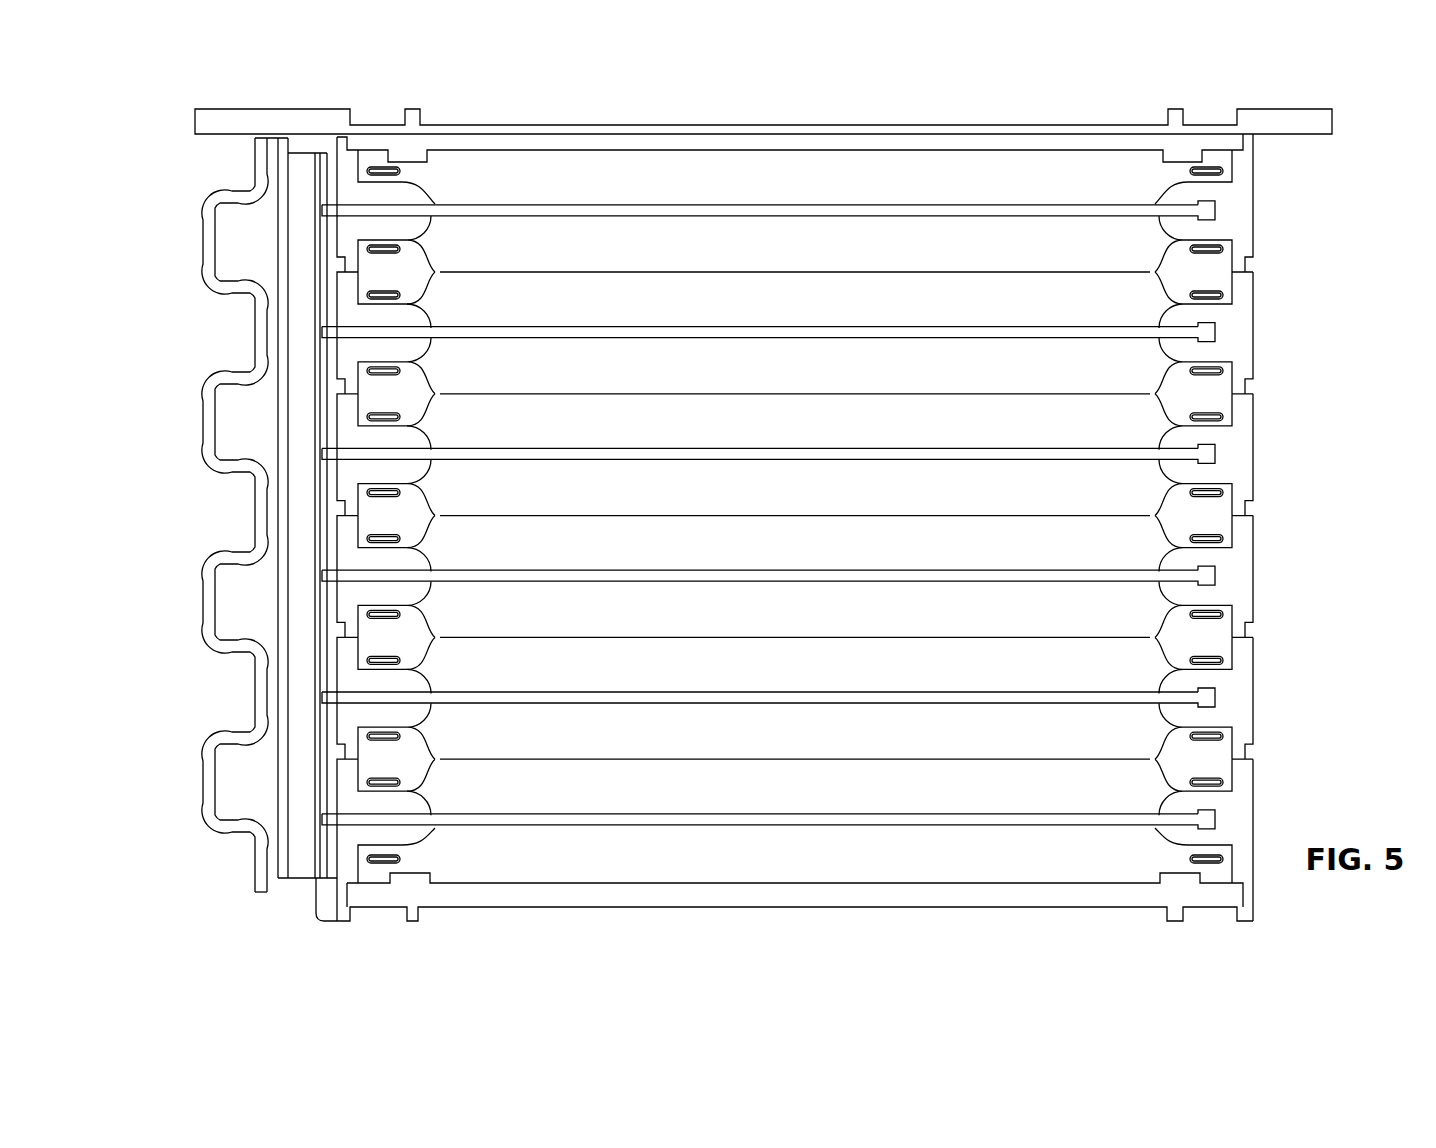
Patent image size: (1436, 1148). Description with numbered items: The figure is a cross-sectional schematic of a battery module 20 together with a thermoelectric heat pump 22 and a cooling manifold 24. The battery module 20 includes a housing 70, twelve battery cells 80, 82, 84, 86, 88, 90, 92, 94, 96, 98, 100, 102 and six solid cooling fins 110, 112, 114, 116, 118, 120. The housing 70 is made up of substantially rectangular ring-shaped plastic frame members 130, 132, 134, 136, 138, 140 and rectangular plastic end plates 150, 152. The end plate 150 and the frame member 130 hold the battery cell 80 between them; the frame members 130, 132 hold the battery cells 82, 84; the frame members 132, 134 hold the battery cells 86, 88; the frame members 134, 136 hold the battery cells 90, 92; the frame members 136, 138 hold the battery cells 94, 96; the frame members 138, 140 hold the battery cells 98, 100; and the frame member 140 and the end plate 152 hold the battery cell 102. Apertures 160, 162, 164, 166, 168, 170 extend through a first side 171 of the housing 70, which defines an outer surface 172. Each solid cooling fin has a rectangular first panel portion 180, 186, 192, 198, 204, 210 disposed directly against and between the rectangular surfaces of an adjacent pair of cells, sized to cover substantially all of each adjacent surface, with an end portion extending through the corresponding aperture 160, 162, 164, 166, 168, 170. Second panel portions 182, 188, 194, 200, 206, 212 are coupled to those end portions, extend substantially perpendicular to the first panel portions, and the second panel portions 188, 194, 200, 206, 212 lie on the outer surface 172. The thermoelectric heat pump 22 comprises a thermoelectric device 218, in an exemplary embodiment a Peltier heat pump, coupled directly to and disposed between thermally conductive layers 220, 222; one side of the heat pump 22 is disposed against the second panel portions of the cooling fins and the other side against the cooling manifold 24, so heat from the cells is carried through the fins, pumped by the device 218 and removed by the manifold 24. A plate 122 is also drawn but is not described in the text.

The battery module 20 is at (968, 108).
The thermoelectric heat pump 22 is at (298, 800).
The cooling manifold 24 is at (233, 478).
The housing 70 is at (848, 132).
The battery cell 80 is at (780, 180).
The battery cell 82 is at (706, 255).
The battery cell 84 is at (780, 302).
The battery cell 86 is at (706, 377).
The battery cell 88 is at (780, 424).
The battery cell 90 is at (706, 499).
The battery cell 92 is at (780, 547).
The battery cell 94 is at (706, 621).
The battery cell 96 is at (780, 668).
The battery cell 98 is at (706, 744).
The battery cell 100 is at (780, 791).
The battery cell 102 is at (795, 883).
The solid cooling fin 110 is at (768, 208).
The solid cooling fin 112 is at (768, 332).
The solid cooling fin 114 is at (768, 454).
The solid cooling fin 116 is at (768, 576).
The solid cooling fin 118 is at (768, 698).
The solid cooling fin 120 is at (866, 826).
The end plate 122 is at (297, 147).
The frame member 130 is at (1257, 185).
The frame member 132 is at (1257, 308).
The frame member 134 is at (1257, 432).
The frame member 136 is at (1257, 555).
The frame member 138 is at (1257, 678).
The frame member 140 is at (1257, 800).
The end plate 150 is at (1062, 132).
The end plate 152 is at (1063, 893).
The aperture 160 is at (328, 193).
The aperture 162 is at (328, 315).
The aperture 164 is at (328, 437).
The aperture 166 is at (328, 561).
The aperture 168 is at (328, 683).
The aperture 170 is at (328, 806).
The first side 171 is at (385, 848).
The outer surface 172 is at (316, 160).
The first panel portion 180 is at (537, 205).
The second panel portion 182 is at (372, 188).
The first panel portion 186 is at (537, 327).
The second panel portion 188 is at (372, 311).
The first panel portion 192 is at (537, 448).
The second panel portion 194 is at (372, 433).
The first panel portion 198 is at (537, 570).
The second panel portion 200 is at (372, 556).
The first panel portion 204 is at (537, 692).
The second panel portion 206 is at (372, 679).
The first panel portion 210 is at (328, 237).
The second panel portion 212 is at (270, 238).
The thermoelectric device 218 is at (300, 882).
The thermally conductive layer 220 is at (325, 915).
The thermally conductive layer 222 is at (283, 885).